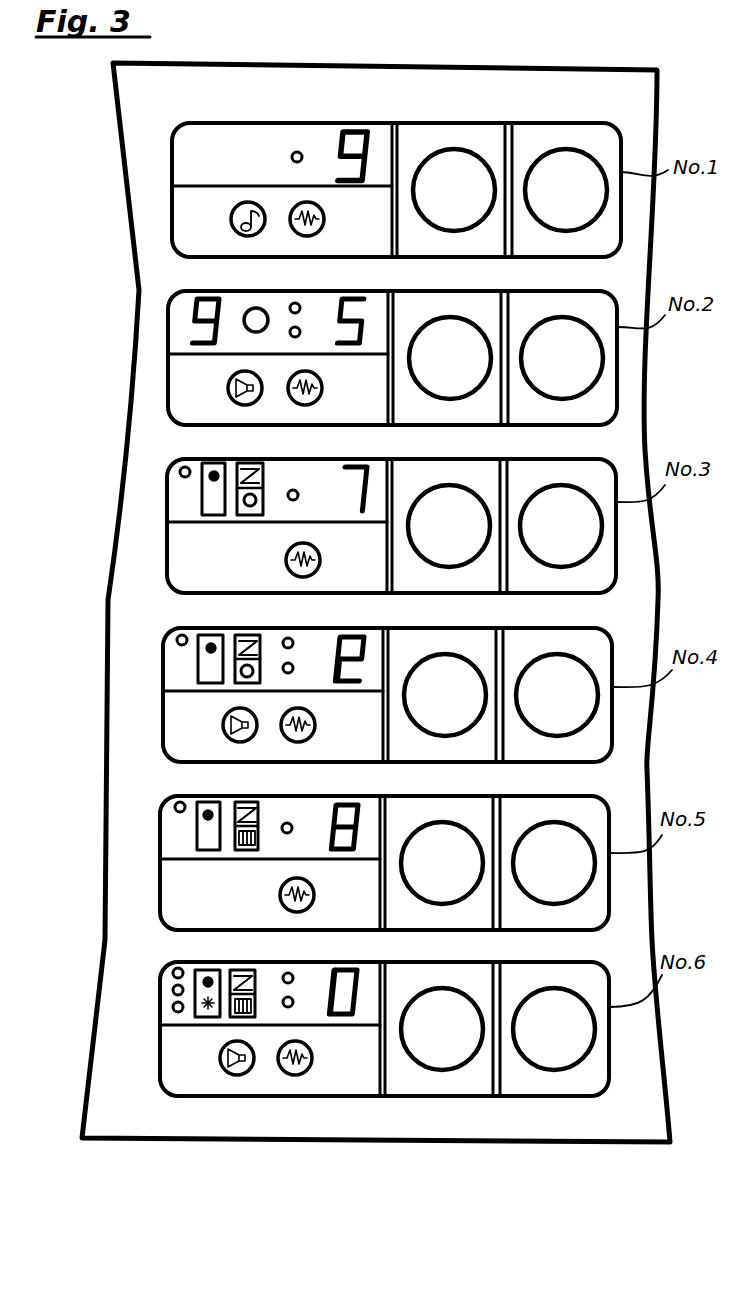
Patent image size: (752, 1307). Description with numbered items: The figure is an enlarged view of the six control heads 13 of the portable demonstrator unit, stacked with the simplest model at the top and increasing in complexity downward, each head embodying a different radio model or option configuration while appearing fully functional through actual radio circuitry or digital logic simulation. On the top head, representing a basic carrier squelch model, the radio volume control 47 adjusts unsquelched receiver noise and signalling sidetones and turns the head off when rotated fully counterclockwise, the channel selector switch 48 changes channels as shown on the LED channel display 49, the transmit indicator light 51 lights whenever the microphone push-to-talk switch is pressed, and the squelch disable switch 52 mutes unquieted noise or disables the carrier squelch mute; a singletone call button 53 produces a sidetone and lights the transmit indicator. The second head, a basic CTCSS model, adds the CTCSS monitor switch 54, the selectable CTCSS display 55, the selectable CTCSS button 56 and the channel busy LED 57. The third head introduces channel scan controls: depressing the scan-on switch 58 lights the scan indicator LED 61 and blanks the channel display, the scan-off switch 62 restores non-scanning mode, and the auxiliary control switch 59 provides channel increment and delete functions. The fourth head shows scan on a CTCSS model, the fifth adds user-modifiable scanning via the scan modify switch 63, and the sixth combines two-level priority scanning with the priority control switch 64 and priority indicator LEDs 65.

The control heads 13 is at (634, 25).
The radio volume control 47 is at (557, 156).
The channel selector switch 48 is at (466, 160).
The LED channel display 49 is at (364, 134).
The transmit indicator light 51 is at (300, 151).
The squelch disable switch 52 is at (325, 218).
The singletone call button 53 is at (231, 214).
The CTCSS monitor switch 54 is at (228, 386).
The selectable CTCSS display 55 is at (198, 300).
The selectable CTCSS button 56 is at (258, 307).
The channel busy LED 57 is at (303, 316).
The scan-on switch 58 is at (257, 464).
The auxiliary control switch 59 is at (214, 472).
The scan indicator LED 61 is at (182, 466).
The scan-off switch 62 is at (250, 510).
The scan modify switch 63 is at (243, 850).
The priority control switch 64 is at (205, 1012).
The priority indicator LEDs 65 is at (165, 985).